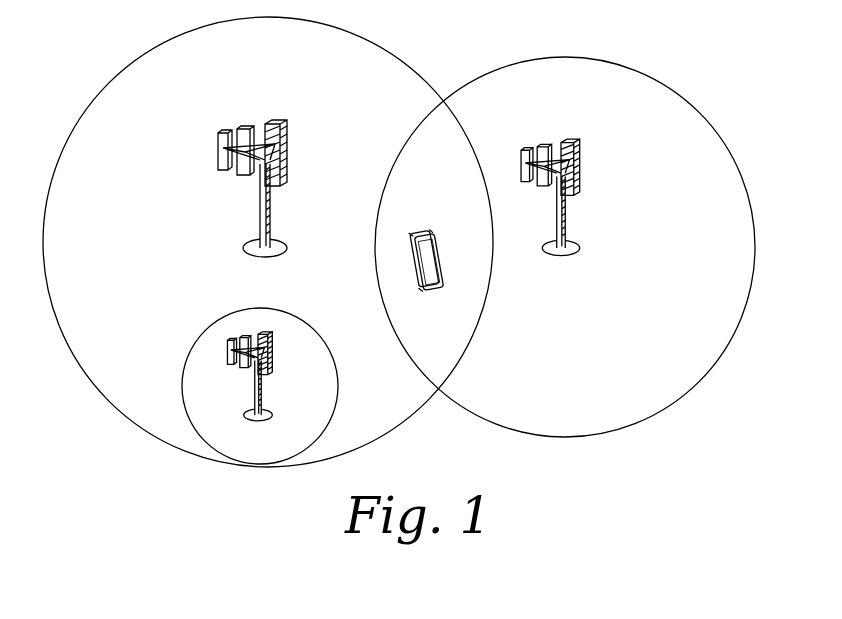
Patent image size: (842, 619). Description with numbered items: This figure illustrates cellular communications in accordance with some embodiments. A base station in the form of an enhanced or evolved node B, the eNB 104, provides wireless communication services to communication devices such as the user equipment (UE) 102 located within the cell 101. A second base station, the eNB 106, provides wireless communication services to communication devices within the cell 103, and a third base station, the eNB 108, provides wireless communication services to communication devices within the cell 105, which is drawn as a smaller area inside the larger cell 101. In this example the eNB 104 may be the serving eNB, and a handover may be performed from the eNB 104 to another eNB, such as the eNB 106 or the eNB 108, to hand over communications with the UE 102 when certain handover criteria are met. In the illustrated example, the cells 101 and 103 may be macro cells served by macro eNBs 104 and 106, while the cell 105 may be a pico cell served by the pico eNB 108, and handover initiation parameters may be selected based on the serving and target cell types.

The cell 101 is at (382, 42).
The user equipment (UE) 102 is at (434, 262).
The cell 103 is at (655, 76).
The eNB 104 is at (226, 140).
The cell 105 is at (310, 324).
The eNB 106 is at (584, 160).
The eNB 108 is at (246, 378).